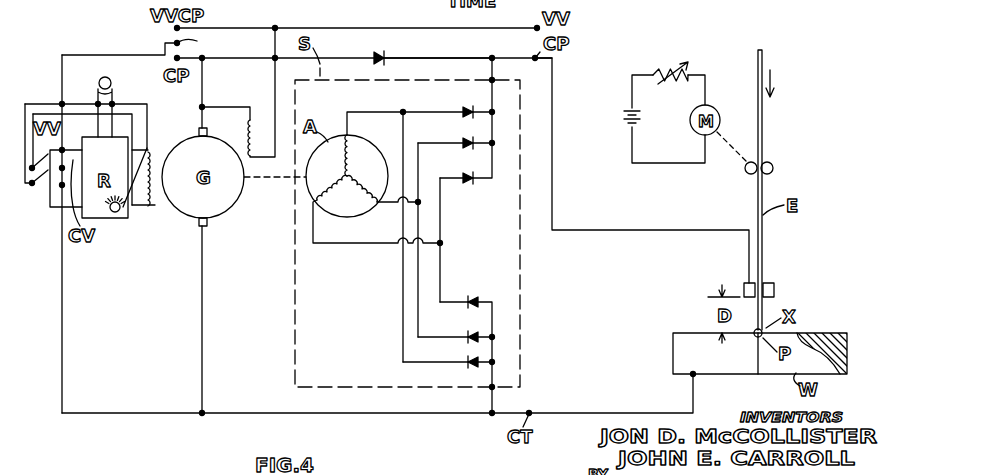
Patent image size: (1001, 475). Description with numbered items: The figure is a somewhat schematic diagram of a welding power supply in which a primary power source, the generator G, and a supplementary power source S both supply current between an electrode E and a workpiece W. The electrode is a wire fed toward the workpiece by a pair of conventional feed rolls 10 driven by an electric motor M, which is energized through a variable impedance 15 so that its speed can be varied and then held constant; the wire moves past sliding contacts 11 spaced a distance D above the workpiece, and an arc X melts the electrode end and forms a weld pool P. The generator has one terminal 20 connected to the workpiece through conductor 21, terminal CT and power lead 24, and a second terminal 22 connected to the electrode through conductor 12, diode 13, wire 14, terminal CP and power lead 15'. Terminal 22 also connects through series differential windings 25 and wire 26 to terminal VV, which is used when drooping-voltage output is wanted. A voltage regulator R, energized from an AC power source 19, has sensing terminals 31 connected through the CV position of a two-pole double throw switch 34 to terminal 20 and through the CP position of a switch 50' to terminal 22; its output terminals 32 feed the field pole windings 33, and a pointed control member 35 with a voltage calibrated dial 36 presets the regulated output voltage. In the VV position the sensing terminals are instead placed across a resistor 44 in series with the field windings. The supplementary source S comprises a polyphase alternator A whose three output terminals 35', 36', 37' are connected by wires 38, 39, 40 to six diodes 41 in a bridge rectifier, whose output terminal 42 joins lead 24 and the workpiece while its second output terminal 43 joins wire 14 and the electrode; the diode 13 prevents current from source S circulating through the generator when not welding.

The feed rolls 10 is at (773, 168).
The sliding contacts 11 is at (774, 283).
The conductor 12 is at (231, 58).
The diode 13 is at (378, 57).
The wire 14 is at (418, 58).
The variable impedance 15 is at (672, 99).
The power lead 15' is at (642, 170).
The AC power source 19 is at (123, 103).
The terminal 20 is at (202, 228).
The conductor 21 is at (202, 292).
The second terminal 22 is at (202, 126).
The power lead 24 is at (582, 413).
The series differential windings 25 is at (250, 136).
The wire 26 is at (333, 28).
The sensing terminals 31 is at (93, 137).
The output terminals 32 is at (130, 207).
The field pole windings 33 is at (145, 150).
The two-pole double throw switch 34 is at (42, 190).
The control member 35 is at (131, 239).
The output terminal 35' is at (302, 200).
The voltage calibrated dial 36 is at (105, 177).
The output terminal 36' is at (368, 145).
The output terminal 37' is at (373, 207).
The wire 38 is at (325, 245).
The wire 39 is at (353, 112).
The wire 40 is at (398, 198).
The diodes 41 is at (470, 177).
The output terminal 42 is at (488, 390).
The second output terminal 43 is at (488, 82).
The resistor 44 is at (116, 212).
The switch 50' is at (147, 47).